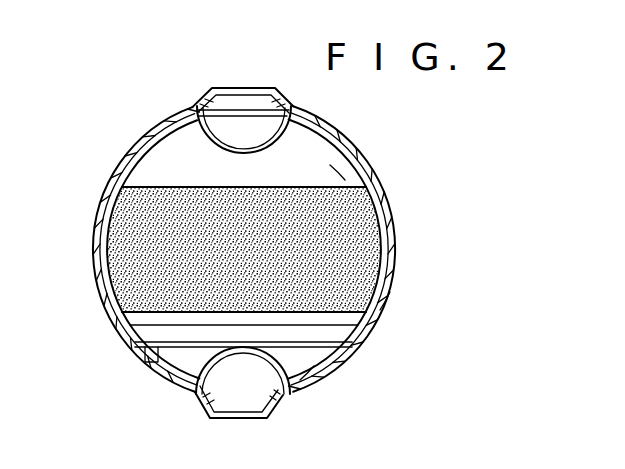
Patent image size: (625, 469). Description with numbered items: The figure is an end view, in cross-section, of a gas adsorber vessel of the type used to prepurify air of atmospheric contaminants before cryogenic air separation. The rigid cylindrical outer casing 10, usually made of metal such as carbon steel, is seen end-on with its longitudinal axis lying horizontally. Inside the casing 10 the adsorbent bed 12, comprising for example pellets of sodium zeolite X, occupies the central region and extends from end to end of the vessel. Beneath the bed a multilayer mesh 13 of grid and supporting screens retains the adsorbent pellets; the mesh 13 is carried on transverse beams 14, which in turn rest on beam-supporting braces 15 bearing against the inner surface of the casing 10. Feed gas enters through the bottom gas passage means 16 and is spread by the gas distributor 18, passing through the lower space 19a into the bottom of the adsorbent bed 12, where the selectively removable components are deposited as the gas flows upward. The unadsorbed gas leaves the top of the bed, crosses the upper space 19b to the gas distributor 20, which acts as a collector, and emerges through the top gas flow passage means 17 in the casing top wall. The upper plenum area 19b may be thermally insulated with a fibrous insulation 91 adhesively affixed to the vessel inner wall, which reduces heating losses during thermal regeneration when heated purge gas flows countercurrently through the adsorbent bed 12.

The rigid cylindrical outer casing 10 is at (121, 165).
The adsorbent bed 12 is at (347, 247).
The multilayer mesh 13 is at (390, 292).
The beams 14 is at (130, 325).
The beam-supporting braces 15 is at (140, 357).
The bottom gas passage means 16 is at (248, 420).
The top gas flow passage means 17 is at (250, 97).
The gas distributor 18 is at (196, 396).
The lower space 19a is at (311, 378).
The upper space 19b is at (330, 165).
The gas distributor 20 is at (214, 140).
The fibrous insulation 91 is at (162, 137).